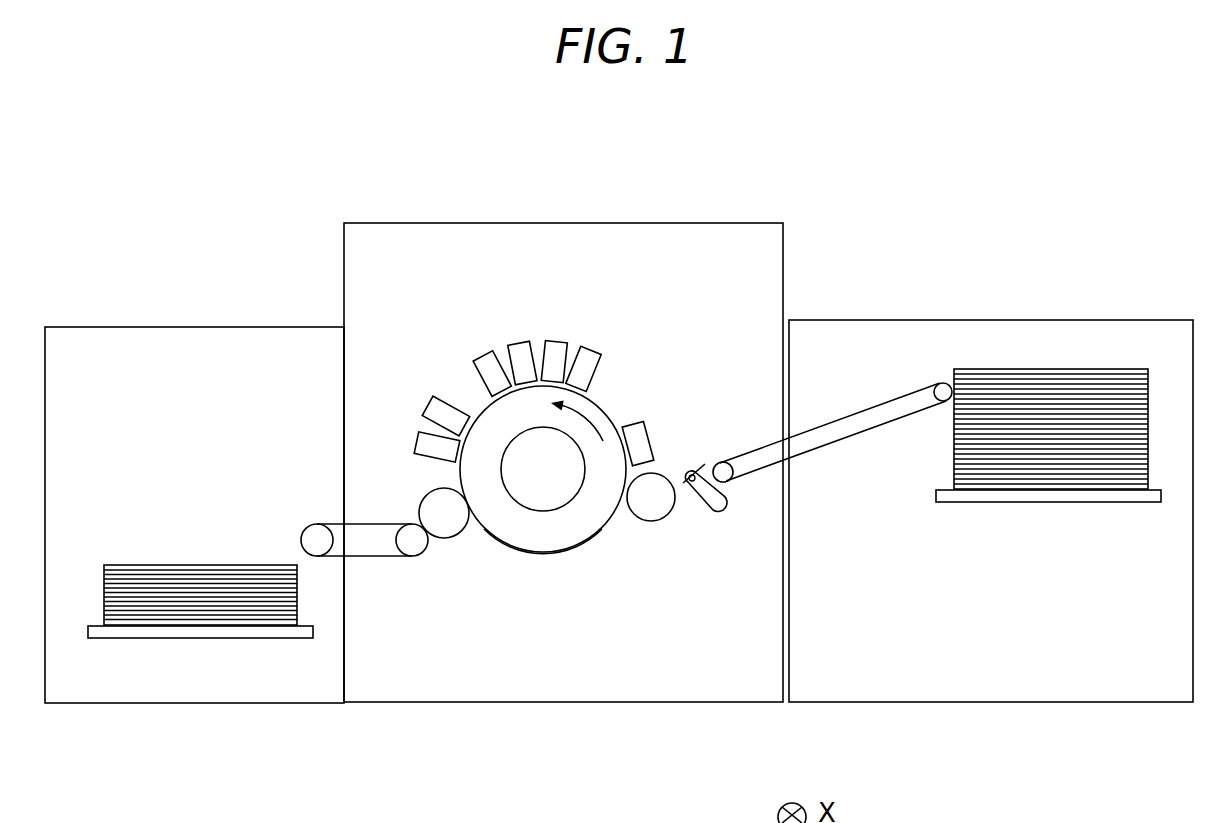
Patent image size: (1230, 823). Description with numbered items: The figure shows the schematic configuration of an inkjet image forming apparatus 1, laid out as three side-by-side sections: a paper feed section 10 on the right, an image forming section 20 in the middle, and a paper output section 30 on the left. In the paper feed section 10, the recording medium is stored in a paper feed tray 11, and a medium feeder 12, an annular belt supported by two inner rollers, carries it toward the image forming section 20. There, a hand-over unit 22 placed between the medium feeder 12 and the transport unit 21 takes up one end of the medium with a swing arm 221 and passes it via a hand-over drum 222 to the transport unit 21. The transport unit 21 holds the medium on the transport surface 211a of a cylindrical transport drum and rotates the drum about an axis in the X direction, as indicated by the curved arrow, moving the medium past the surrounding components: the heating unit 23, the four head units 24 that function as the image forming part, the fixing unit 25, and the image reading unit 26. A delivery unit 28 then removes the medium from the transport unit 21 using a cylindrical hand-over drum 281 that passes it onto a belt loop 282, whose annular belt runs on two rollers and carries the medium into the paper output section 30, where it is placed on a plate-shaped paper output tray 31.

The inkjet image forming apparatus 1 is at (584, 109).
The paper feed section 10 is at (933, 319).
The paper feed tray 11 is at (1040, 505).
The medium feeder 12 is at (822, 423).
The image forming section 20 is at (692, 222).
The transport unit 21 is at (504, 570).
The transport surface 211a is at (537, 550).
The hand-over unit 22 is at (653, 563).
The swing arm 221 is at (717, 512).
The hand-over drum 222 is at (647, 523).
The heating unit 23 is at (650, 438).
The head units 24 is at (630, 313).
The fixing unit 25 is at (425, 410).
The image reading unit 26 is at (418, 440).
The delivery unit 28 is at (385, 575).
The hand-over drum 281 is at (447, 542).
The belt loop 282 is at (364, 572).
The paper output section 30 is at (167, 325).
The paper output tray 31 is at (203, 638).